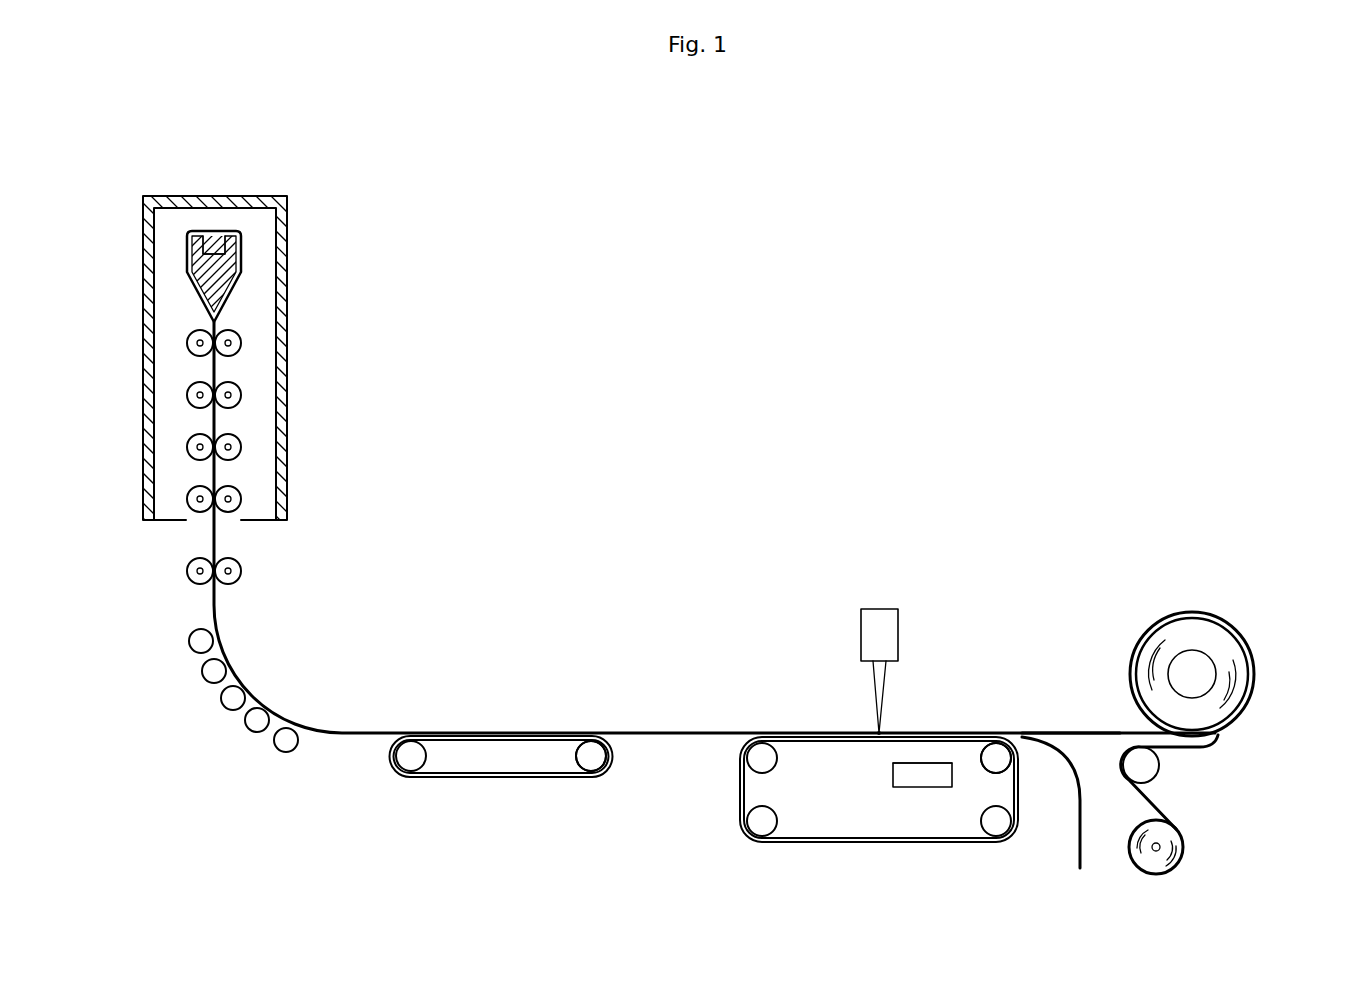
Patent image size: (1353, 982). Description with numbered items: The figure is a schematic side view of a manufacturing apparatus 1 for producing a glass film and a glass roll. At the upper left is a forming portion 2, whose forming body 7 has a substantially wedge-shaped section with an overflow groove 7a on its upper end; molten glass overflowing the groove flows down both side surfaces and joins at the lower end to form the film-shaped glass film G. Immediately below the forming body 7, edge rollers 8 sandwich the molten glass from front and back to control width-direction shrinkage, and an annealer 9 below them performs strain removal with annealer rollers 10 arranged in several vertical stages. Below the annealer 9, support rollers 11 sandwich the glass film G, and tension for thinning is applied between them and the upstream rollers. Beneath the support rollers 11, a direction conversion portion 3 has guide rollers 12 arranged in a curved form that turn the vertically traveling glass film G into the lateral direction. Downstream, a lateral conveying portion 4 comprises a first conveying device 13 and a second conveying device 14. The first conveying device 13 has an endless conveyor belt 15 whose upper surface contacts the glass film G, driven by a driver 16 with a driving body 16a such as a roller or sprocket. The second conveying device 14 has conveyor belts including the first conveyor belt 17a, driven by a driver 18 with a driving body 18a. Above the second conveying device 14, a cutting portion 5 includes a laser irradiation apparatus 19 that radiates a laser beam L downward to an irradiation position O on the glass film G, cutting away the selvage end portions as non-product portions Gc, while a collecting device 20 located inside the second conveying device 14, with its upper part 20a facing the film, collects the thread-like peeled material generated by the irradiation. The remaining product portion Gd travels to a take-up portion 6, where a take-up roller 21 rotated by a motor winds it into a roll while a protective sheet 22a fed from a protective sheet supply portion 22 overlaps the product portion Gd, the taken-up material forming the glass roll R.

The manufacturing apparatus 1 is at (918, 227).
The forming portion 2 is at (320, 218).
The direction conversion portion 3 is at (212, 712).
The lateral conveying portion 4 is at (505, 825).
The cutting portion 5 is at (900, 628).
The take-up portion 6 is at (1222, 634).
The forming body 7 is at (232, 290).
The overflow groove 7a is at (214, 245).
The edge rollers 8 is at (241, 338).
The annealer 9 is at (178, 378).
The annealer rollers 10 is at (241, 390).
The support rollers 11 is at (242, 569).
The guide rollers 12 is at (189, 641).
The first conveying device 13 is at (505, 802).
The second conveying device 14 is at (902, 837).
The conveyor belt 15 is at (440, 779).
The driver 16 is at (577, 763).
The driving body 16a is at (596, 760).
The first conveyor belt 17a is at (825, 845).
The driver 18 is at (985, 771).
The driving body 18a is at (1004, 756).
The laser irradiation apparatus 19 is at (882, 609).
The collecting device 20 is at (909, 791).
The suction surface 20a is at (936, 789).
The take-up roller 21 is at (1212, 670).
The protective sheet supply portion 22 is at (1148, 878).
The protective sheet 22a is at (1156, 801).
The glass film G is at (216, 405).
The non-product portions Gc is at (1072, 851).
The product portion Gd is at (1080, 722).
The laser beam L is at (874, 681).
The irradiation position O is at (877, 732).
The glass roll R is at (1184, 608).